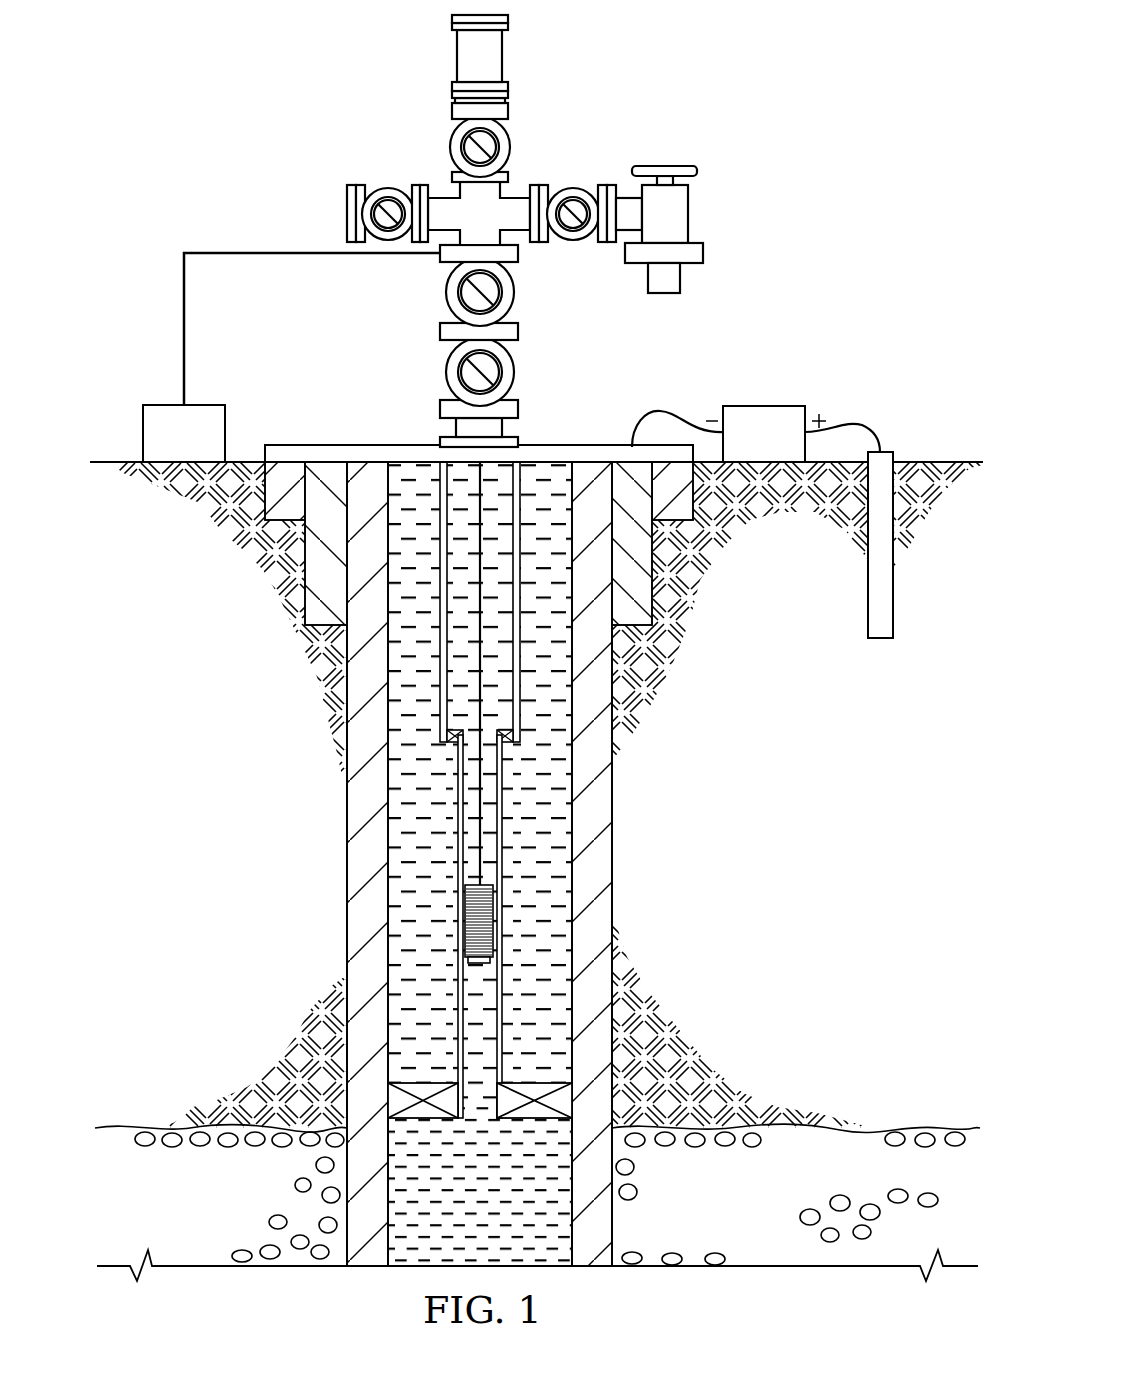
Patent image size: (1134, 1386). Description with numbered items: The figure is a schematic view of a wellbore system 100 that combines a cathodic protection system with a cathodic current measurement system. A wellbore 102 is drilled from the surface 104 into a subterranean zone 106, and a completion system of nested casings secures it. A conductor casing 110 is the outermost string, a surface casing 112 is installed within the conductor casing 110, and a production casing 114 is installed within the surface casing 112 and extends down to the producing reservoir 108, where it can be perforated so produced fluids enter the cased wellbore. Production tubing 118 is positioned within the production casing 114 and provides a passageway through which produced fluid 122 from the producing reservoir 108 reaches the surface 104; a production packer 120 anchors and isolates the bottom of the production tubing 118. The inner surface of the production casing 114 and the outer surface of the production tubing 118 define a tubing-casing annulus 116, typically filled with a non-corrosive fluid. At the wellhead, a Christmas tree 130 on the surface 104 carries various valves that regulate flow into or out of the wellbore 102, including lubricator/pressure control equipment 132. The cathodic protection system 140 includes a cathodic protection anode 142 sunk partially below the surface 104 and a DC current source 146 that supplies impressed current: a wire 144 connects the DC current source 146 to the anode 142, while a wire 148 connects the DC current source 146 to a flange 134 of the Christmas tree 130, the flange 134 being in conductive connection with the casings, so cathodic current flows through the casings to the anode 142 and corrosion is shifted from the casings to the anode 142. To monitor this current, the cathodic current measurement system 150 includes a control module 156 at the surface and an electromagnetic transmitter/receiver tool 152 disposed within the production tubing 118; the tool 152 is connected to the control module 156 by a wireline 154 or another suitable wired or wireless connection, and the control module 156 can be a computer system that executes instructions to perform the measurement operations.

The wellbore system 100 is at (247, 72).
The wellbore 102 is at (358, 926).
The surface 104 is at (242, 462).
The subterranean zone 106 is at (824, 800).
The producing reservoir 108 is at (232, 1218).
The conductor casing 110 is at (683, 505).
The surface casing 112 is at (643, 590).
The production casing 114 is at (603, 862).
The tubing-casing annulus 116 is at (560, 755).
The production tubing 118 is at (500, 832).
The production packer 120 is at (543, 1110).
The produced fluid 122 is at (590, 1205).
The Christmas tree 130 is at (446, 375).
The lubricator/pressure control equipment 132 is at (455, 53).
The flange 134 is at (338, 446).
The cathodic protection system 140 is at (866, 326).
The cathodic protection anode 142 is at (895, 455).
The wire 144 is at (856, 432).
The DC current source 146 is at (764, 406).
The wire 148 is at (650, 408).
The cathodic current measurement system 150 is at (152, 338).
The electromagnetic transmitter/receiver tool 152 is at (463, 917).
The wireline 154 is at (468, 845).
The control module 156 is at (143, 438).